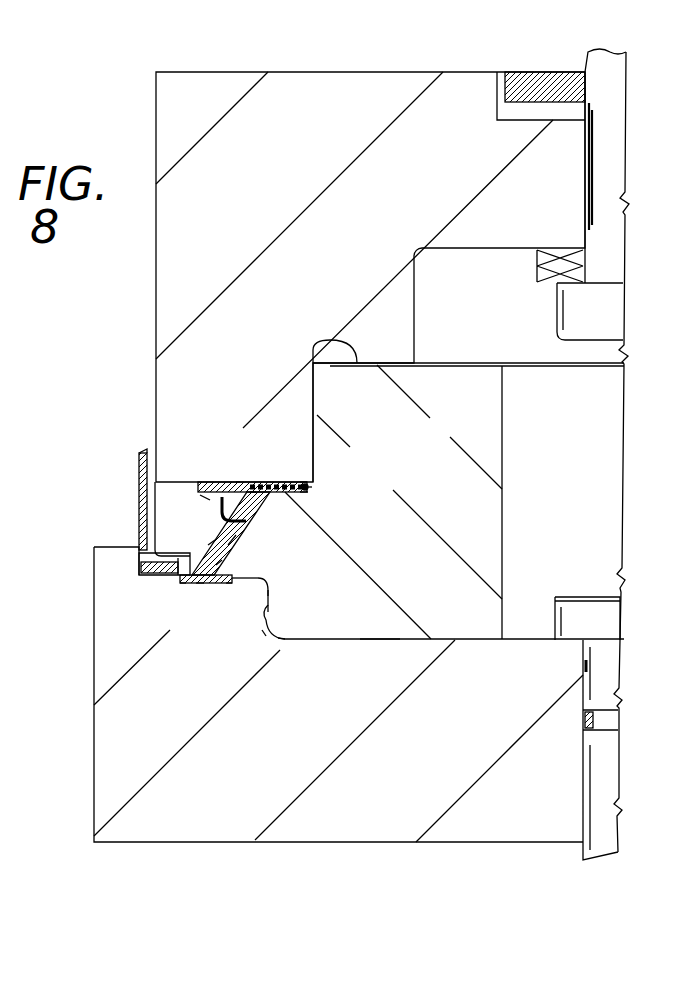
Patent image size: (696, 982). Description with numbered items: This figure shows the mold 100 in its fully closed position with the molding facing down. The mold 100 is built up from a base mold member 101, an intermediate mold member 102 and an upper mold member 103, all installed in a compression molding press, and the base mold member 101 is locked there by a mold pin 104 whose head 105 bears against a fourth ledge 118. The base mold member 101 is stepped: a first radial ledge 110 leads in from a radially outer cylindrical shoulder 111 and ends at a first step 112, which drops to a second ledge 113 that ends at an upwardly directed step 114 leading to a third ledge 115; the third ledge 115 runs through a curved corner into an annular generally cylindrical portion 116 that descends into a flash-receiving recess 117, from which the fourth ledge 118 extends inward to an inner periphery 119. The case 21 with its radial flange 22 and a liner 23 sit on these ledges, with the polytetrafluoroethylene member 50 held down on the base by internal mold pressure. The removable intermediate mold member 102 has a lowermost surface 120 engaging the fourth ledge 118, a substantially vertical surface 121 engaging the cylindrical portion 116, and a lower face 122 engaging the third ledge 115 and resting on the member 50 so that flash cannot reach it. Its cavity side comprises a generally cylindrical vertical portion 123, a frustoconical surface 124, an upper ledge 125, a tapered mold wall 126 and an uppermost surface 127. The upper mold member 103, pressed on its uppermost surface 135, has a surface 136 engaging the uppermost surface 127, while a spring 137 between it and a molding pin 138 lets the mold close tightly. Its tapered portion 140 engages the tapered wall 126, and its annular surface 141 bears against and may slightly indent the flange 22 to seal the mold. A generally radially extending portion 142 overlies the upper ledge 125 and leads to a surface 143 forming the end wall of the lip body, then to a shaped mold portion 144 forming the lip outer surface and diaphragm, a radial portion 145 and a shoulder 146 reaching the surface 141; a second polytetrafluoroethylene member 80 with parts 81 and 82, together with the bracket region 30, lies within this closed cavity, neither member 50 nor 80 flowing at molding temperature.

The mold 100 is at (130, 98).
The base mold member 101 is at (368, 739).
The intermediate mold member 102 is at (437, 447).
The upper mold member 103 is at (348, 130).
The mold pin 104 is at (620, 675).
The head 105 is at (602, 632).
The first radial ledge 110 is at (140, 570).
The radially outer cylindrical shoulder 111 is at (140, 558).
The first step 112 is at (185, 585).
The second ledge 113 is at (200, 582).
The upwardly directed step 114 is at (245, 582).
The third ledge 115 is at (263, 580).
The annular generally cylindrical portion 116 is at (262, 636).
The flash-receiving recess 117 is at (282, 645).
The fourth ledge 118 is at (366, 638).
The inner periphery 119 is at (585, 666).
The lowermost surface 120 is at (388, 641).
The substantially vertical surface 121 is at (270, 606).
The lower face 122 is at (268, 593).
The generally cylindrical vertical portion 123 is at (220, 565).
The frustoconical surface 124 is at (228, 544).
The upper ledge 125 is at (308, 494).
The tapered mold wall 126 is at (312, 488).
The uppermost surface 127 is at (493, 367).
The uppermost surface 135 is at (287, 72).
The surface 136 is at (418, 363).
The spring 137 is at (545, 266).
The molding pin 138 is at (580, 180).
The tapered portion 140 is at (318, 383).
The annular surface 141 is at (170, 578).
The generally radially extending portion 142 is at (305, 482).
The surface 143 is at (238, 482).
The shaped mold portion 144 is at (200, 497).
The radial portion 145 is at (220, 520).
The shoulder 146 is at (207, 545).
The case 21 is at (140, 457).
The radial flange 22 is at (140, 548).
The liner strip 23 is at (140, 500).
The mounting bracket 30 is at (215, 482).
The polytetrafluoroethylene member 50 is at (243, 571).
The polytetrafluoroethylene member 80 is at (252, 491).
The seal 81 is at (240, 482).
The bracket end 82 is at (303, 480).